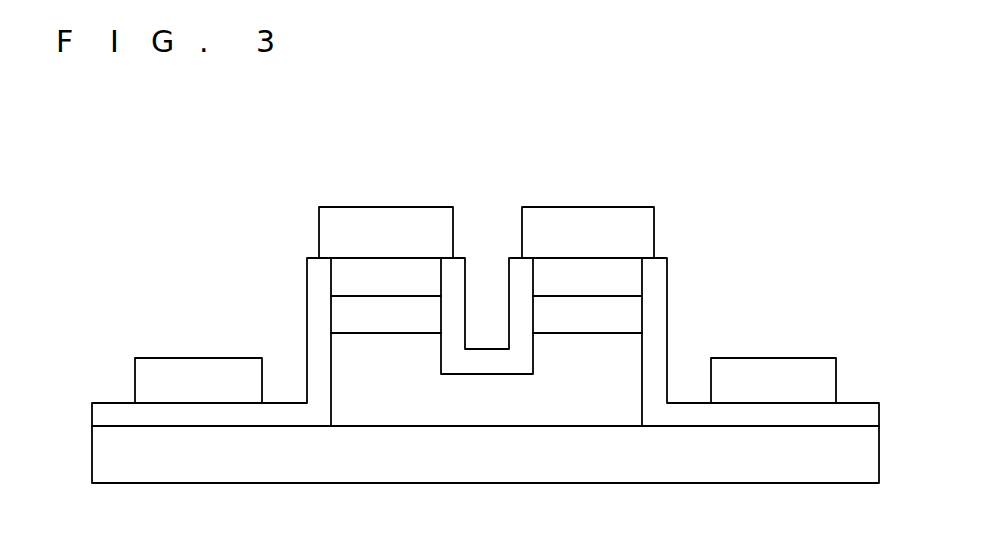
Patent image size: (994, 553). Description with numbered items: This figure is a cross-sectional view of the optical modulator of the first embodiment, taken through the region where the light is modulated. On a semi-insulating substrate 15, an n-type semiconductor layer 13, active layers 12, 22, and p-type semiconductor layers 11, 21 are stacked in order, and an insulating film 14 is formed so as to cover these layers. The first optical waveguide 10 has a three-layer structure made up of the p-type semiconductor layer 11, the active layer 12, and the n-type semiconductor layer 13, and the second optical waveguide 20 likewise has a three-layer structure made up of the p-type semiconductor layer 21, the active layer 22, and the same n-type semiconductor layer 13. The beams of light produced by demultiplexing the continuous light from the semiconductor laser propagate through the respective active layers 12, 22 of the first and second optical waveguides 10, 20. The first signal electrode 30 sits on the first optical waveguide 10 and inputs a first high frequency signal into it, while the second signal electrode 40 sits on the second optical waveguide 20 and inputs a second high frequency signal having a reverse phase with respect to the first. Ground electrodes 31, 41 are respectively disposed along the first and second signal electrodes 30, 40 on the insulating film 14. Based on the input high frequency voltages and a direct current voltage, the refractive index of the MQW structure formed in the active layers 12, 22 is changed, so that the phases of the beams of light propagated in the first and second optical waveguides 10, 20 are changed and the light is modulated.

The first optical waveguide 10 is at (233, 255).
The p-type semiconductor layer 11 is at (340, 275).
The active layer 12 is at (342, 313).
The n-type semiconductor layer 13 is at (340, 347).
The insulating film 14 is at (103, 415).
The semi-insulating substrate 15 is at (870, 455).
The second optical waveguide 20 is at (748, 255).
The p-type semiconductor layer 21 is at (635, 277).
The active layer 22 is at (635, 313).
The first signal electrode 30 is at (383, 207).
The ground electrode 31 is at (147, 385).
The second signal electrode 40 is at (590, 207).
The ground electrode 41 is at (827, 385).